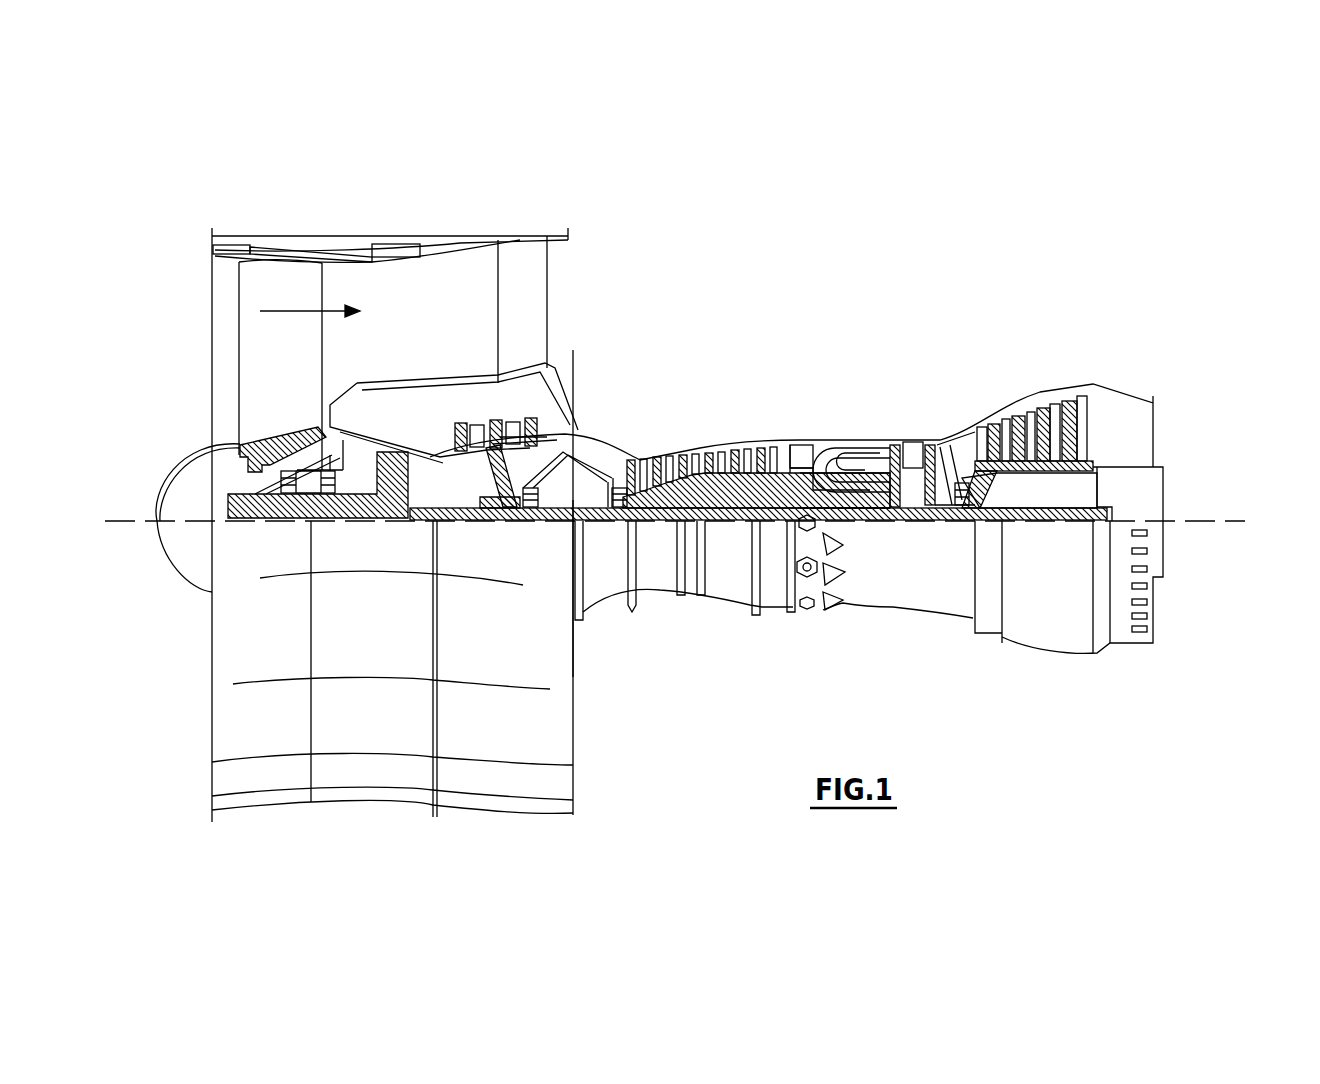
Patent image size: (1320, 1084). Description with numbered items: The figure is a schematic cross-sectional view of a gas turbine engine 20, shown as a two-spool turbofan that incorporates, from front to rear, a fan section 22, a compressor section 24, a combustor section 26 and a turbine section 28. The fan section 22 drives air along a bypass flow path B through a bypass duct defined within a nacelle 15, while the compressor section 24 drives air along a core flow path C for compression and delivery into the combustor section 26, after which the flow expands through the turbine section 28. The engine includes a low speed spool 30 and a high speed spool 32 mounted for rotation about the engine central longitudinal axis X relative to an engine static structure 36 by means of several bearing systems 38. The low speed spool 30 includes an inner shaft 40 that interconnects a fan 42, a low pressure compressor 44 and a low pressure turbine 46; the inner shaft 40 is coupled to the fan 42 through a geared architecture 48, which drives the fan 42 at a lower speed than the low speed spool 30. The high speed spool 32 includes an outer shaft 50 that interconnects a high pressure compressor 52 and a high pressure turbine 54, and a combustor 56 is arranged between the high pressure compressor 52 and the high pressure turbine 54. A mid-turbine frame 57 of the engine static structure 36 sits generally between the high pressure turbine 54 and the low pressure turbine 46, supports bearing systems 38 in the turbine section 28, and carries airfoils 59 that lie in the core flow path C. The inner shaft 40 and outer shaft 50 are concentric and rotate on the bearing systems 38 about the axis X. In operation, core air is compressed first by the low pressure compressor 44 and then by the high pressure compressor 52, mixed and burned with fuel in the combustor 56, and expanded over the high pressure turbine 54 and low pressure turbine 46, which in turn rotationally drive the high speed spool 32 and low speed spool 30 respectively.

The nacelle 15 is at (393, 242).
The gas turbine engine 20 is at (858, 283).
The fan section 22 is at (318, 222).
The compressor section 24 is at (627, 422).
The combustor section 26 is at (847, 410).
The turbine section 28 is at (995, 377).
The low speed spool 30 is at (731, 535).
The high speed spool 32 is at (767, 487).
The engine static structure 36 is at (772, 615).
The bearing systems 38 is at (530, 510).
The inner shaft 40 is at (590, 521).
The fan 42 is at (298, 362).
The low pressure compressor 44 is at (497, 430).
The low pressure turbine 46 is at (1040, 410).
The geared architecture 48 is at (400, 503).
The outer shaft 50 is at (853, 512).
The high pressure compressor 52 is at (707, 477).
The high pressure turbine 54 is at (908, 435).
The combustor 56 is at (845, 462).
The mid-turbine frame 57 is at (956, 427).
The airfoils 59 is at (963, 457).
The bypass flow path B is at (298, 312).
The core flow path C is at (392, 416).
The engine central longitudinal axis X is at (1243, 521).